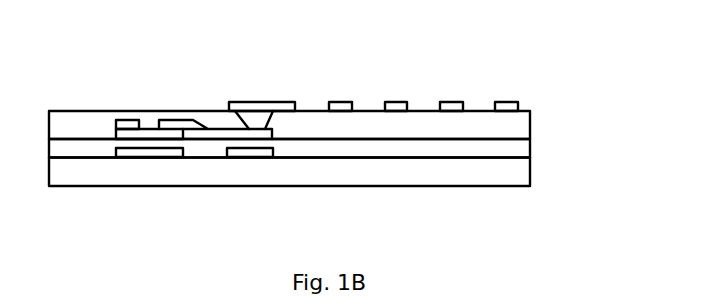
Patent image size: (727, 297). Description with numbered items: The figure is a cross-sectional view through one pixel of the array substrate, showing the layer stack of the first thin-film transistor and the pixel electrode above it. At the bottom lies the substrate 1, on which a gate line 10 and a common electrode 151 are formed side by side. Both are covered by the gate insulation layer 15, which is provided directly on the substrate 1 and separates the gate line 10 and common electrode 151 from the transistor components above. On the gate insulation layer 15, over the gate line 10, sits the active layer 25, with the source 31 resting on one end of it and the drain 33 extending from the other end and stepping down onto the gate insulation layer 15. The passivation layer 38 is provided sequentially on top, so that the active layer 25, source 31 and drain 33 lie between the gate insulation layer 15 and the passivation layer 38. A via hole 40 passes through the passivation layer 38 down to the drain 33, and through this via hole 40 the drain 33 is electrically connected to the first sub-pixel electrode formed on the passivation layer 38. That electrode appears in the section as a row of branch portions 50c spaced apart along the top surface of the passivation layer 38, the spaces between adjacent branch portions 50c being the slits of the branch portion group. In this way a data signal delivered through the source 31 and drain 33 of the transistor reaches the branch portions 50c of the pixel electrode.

The substrate 1 is at (485, 167).
The gate line 10 is at (143, 150).
The gate insulation layer 15 is at (500, 145).
The common electrode 151 is at (250, 153).
The active layer 25 is at (153, 133).
The source 31 is at (122, 122).
The drain 33 is at (192, 122).
The passivation layer 38 is at (500, 118).
The via hole 40 is at (255, 122).
The branch portions 50c is at (444, 105).